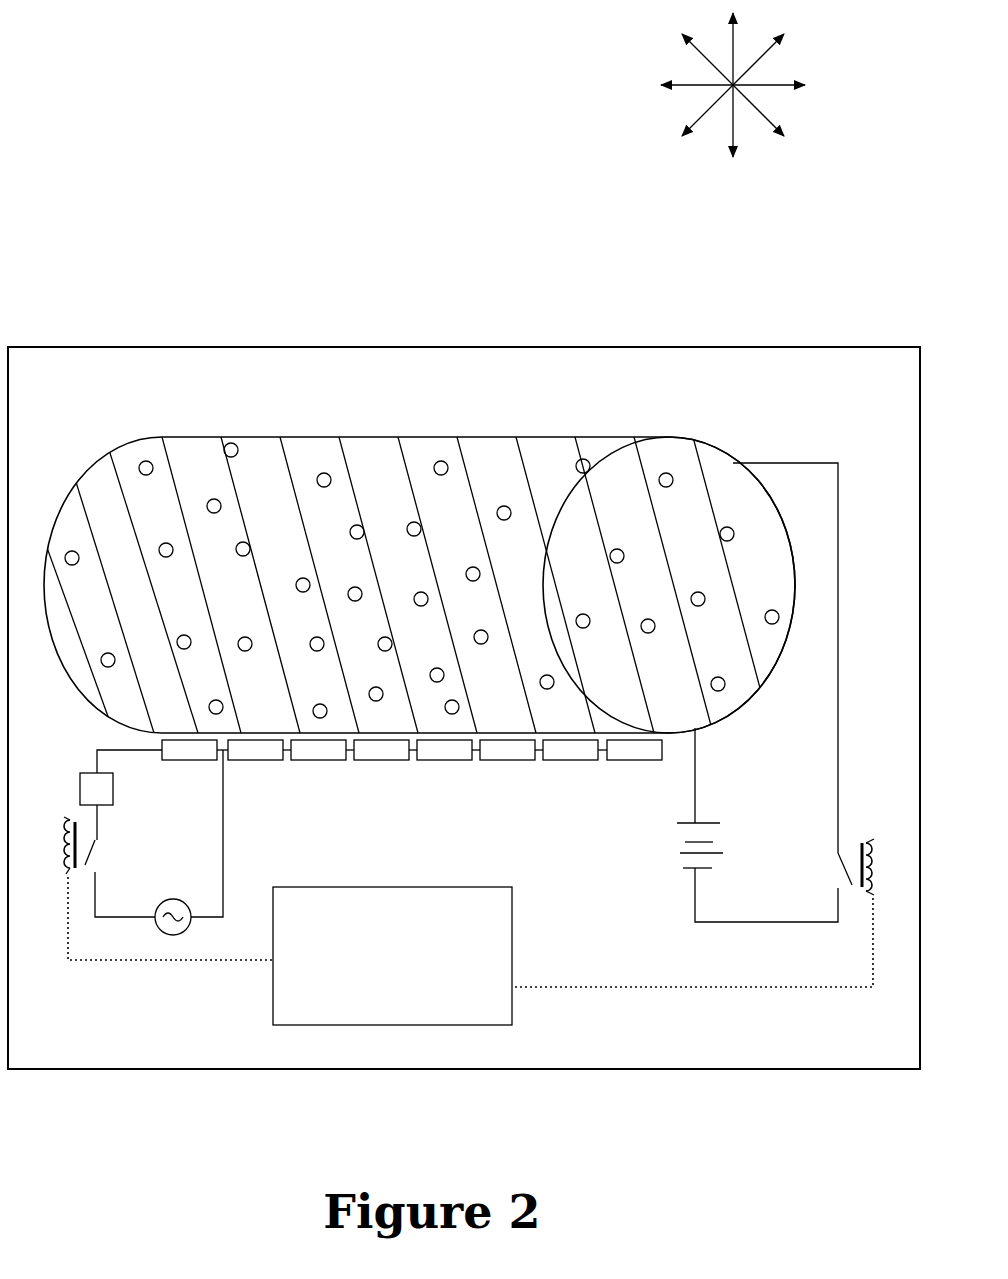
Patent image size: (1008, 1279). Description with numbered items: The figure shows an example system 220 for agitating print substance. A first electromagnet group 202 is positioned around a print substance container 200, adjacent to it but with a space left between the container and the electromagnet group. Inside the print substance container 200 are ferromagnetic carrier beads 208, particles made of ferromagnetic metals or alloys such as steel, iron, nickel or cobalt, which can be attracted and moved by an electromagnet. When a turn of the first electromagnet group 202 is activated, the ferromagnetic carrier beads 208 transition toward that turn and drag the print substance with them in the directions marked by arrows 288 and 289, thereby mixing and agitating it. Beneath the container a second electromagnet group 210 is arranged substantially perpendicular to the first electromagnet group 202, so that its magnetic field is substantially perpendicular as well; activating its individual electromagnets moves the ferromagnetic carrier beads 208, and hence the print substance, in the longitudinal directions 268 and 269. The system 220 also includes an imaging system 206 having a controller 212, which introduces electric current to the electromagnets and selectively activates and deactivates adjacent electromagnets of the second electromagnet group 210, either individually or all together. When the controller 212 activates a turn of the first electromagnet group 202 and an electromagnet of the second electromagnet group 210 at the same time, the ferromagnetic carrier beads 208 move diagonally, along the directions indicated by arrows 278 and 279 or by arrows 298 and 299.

The print substance container 200 is at (708, 443).
The first electromagnet group 202 is at (289, 467).
The imaging system 206 is at (118, 347).
The ferromagnetic carrier beads 208 is at (580, 458).
The second electromagnet group 210 is at (497, 760).
The controller 212 is at (273, 993).
The system 220 is at (185, 188).
The direction 268 is at (736, 42).
The direction 269 is at (736, 137).
The direction 278 is at (780, 43).
The direction 279 is at (683, 121).
The direction 288 is at (798, 83).
The direction 289 is at (672, 83).
The direction 298 is at (787, 121).
The direction 299 is at (691, 43).